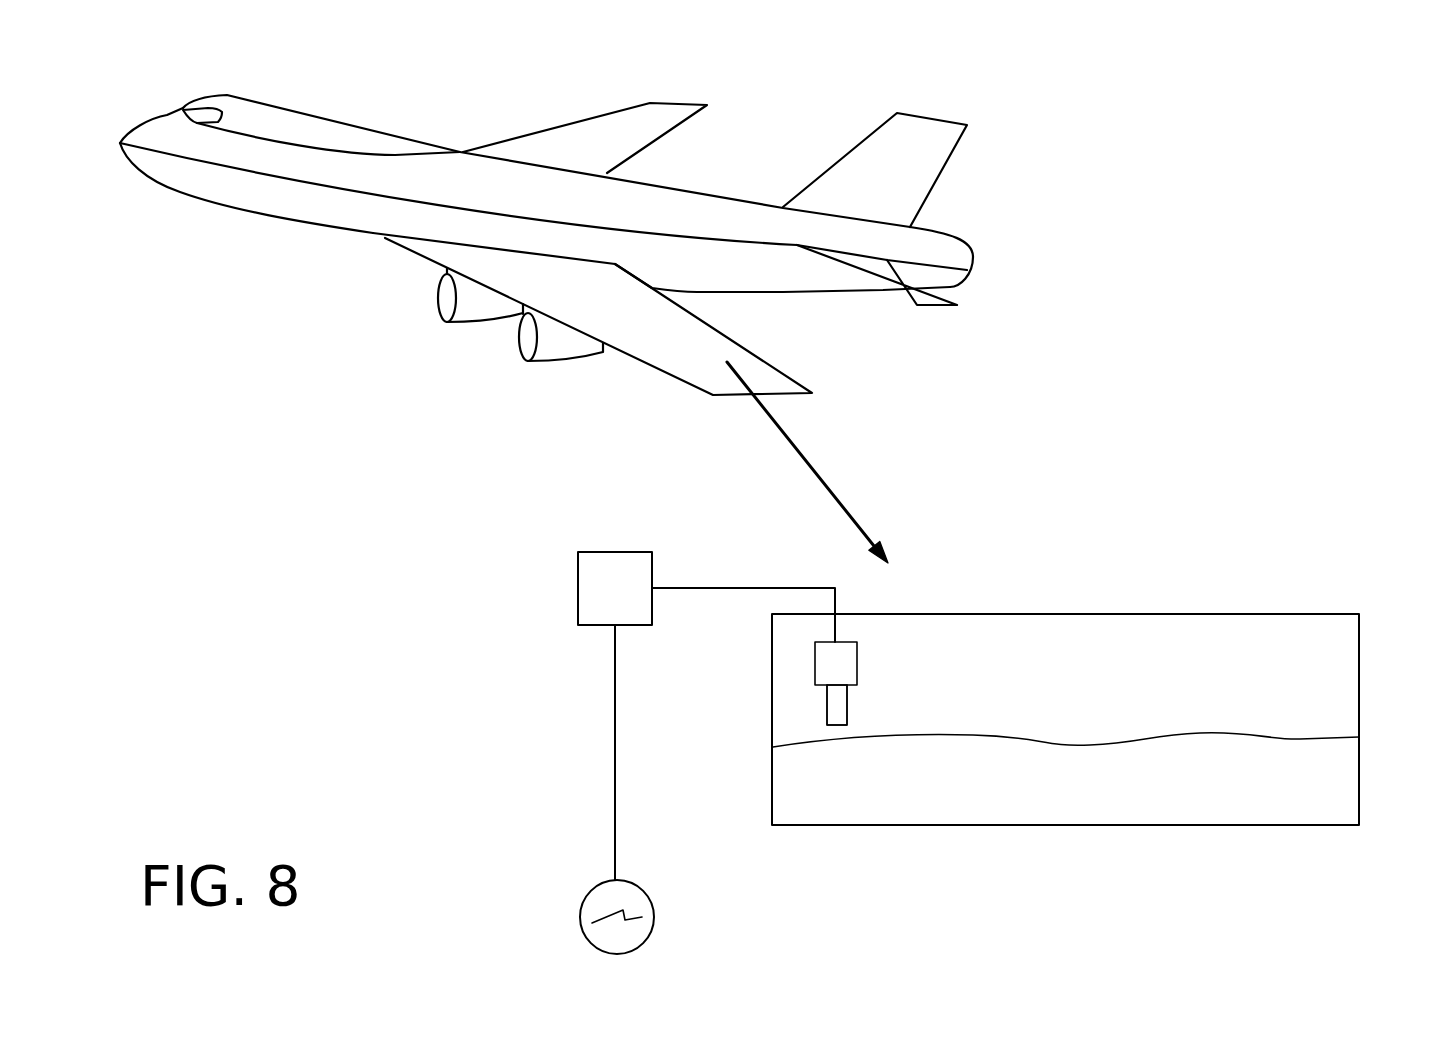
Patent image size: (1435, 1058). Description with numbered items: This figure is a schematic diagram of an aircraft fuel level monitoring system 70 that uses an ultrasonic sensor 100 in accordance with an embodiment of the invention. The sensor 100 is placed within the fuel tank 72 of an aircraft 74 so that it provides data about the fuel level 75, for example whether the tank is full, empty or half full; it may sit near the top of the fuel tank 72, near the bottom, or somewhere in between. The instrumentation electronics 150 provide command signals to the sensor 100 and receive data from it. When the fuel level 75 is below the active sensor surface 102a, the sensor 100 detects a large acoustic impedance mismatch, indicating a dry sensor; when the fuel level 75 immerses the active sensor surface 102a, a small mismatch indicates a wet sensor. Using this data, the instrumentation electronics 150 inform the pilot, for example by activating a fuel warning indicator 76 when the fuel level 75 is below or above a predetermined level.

The aircraft 74 is at (290, 107).
The fuel measurement system 70 is at (522, 537).
The instrumentation electronics 150 is at (578, 595).
The fuel tank 72 is at (1170, 613).
The sensor 100 is at (813, 660).
The active sensor surface 102a is at (837, 725).
The fuel level 75 is at (1252, 727).
The fuel warning indicator 76 is at (655, 919).